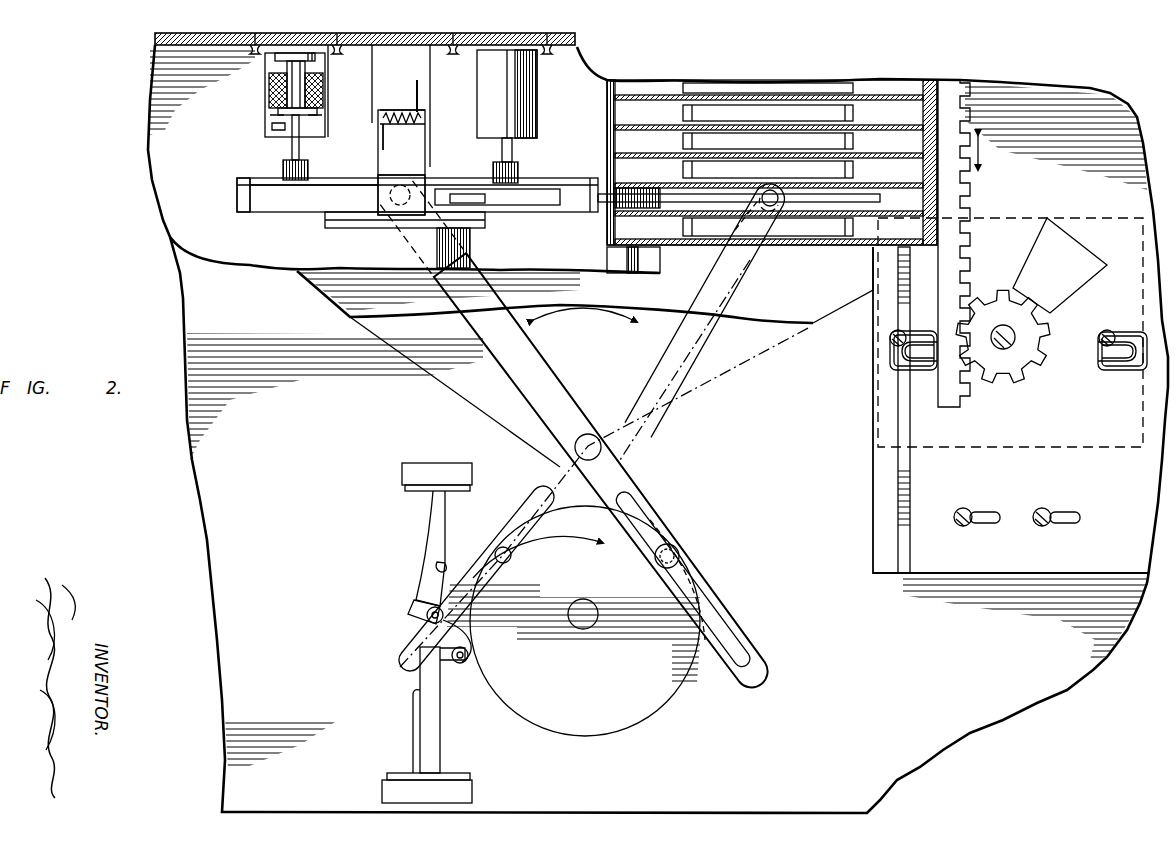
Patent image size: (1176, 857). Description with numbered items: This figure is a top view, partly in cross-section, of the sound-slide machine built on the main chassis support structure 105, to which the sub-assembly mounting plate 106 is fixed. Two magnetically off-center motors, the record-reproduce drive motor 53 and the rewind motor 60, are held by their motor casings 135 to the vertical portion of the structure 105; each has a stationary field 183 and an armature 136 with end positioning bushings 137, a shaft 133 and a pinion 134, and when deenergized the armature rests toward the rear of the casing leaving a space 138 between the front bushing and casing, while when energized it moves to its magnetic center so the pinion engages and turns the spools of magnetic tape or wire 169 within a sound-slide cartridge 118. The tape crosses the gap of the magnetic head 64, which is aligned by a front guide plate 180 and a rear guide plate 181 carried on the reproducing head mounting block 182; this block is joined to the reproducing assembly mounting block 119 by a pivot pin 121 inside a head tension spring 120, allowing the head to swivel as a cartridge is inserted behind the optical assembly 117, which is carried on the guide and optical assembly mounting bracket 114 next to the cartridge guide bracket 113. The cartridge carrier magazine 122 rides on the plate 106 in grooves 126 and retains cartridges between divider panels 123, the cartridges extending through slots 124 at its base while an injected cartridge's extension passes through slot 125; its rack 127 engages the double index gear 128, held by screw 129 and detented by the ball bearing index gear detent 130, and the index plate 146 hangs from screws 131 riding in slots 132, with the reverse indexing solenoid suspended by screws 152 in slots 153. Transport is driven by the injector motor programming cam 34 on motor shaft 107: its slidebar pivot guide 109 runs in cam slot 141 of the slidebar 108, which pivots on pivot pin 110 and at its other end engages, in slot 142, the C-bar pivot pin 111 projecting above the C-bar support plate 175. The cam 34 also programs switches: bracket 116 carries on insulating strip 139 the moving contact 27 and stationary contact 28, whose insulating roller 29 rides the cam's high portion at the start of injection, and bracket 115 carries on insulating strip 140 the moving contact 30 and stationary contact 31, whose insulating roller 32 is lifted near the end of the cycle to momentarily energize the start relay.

The main chassis support structure 105 is at (395, 33).
The sub-assembly mounting plate 106 is at (155, 180).
The armature 136 is at (282, 62).
The record-reproduce drive motor 53 is at (267, 90).
The stationary field 183 is at (268, 105).
The end positioning bushing 137 is at (320, 56).
The space 138 is at (315, 128).
The motor casing 135 is at (276, 138).
The shaft 133 is at (300, 152).
The pinion 134 is at (284, 168).
The sound-slide cartridge guide bracket 113 is at (245, 180).
The sound-slide cartridge 118 is at (247, 198).
The sound-slide cartridge guide and optical assembly mounting bracket 114 is at (275, 213).
The front guide plate 180 is at (398, 213).
The slot 142 is at (420, 247).
The rear guide plate 181 is at (388, 180).
The reproducing assembly mounting block 119 is at (430, 70).
The head tension spring 120 is at (420, 92).
The pivot pin 121 is at (425, 117).
The reproducing head mounting block 182 is at (420, 147).
The magnetic head 64 is at (418, 190).
The rewind motor 60 is at (538, 90).
The magnetic tape or wire 169 is at (468, 214).
The slot 125 is at (587, 202).
The optical assembly 117 is at (468, 250).
The grooves 126 is at (627, 259).
The magazine divider panels 123 is at (648, 97).
The slots 124 is at (662, 198).
The cartridge carrier magazine 122 is at (950, 78).
The rack 127 is at (944, 407).
The C-bar pivot pin 111 is at (767, 207).
The C-bar support plate 175 is at (772, 308).
The slidebar 108 is at (665, 372).
The slidebar cam slot 141 is at (712, 618).
The slidebar pivot pin 110 is at (601, 450).
The injector motor programming cam 34 is at (585, 733).
The shaft 107 is at (588, 630).
The slidebar pivot guide 109 is at (680, 554).
The bracket 116 is at (402, 472).
The insulating strip 139 is at (405, 487).
The moving contact element 27 is at (432, 530).
The stationary contact element 28 is at (470, 550).
The insulating roller 29 is at (427, 617).
The insulating roller 32 is at (468, 655).
The moving contact element 30 is at (441, 723).
The stationary contact element 31 is at (413, 720).
The insulating strip 140 is at (387, 777).
The bracket 115 is at (473, 790).
The index plate 146 is at (998, 448).
The ball bearing index gear detent 130 is at (1082, 250).
The double index gear 128 is at (1040, 350).
The index gear mounting screw 129 is at (1008, 376).
The indexing plate suspension screws 131 is at (900, 332).
The slots 132 is at (895, 355).
The screws 152 is at (966, 527).
The slots 153 is at (1062, 513).